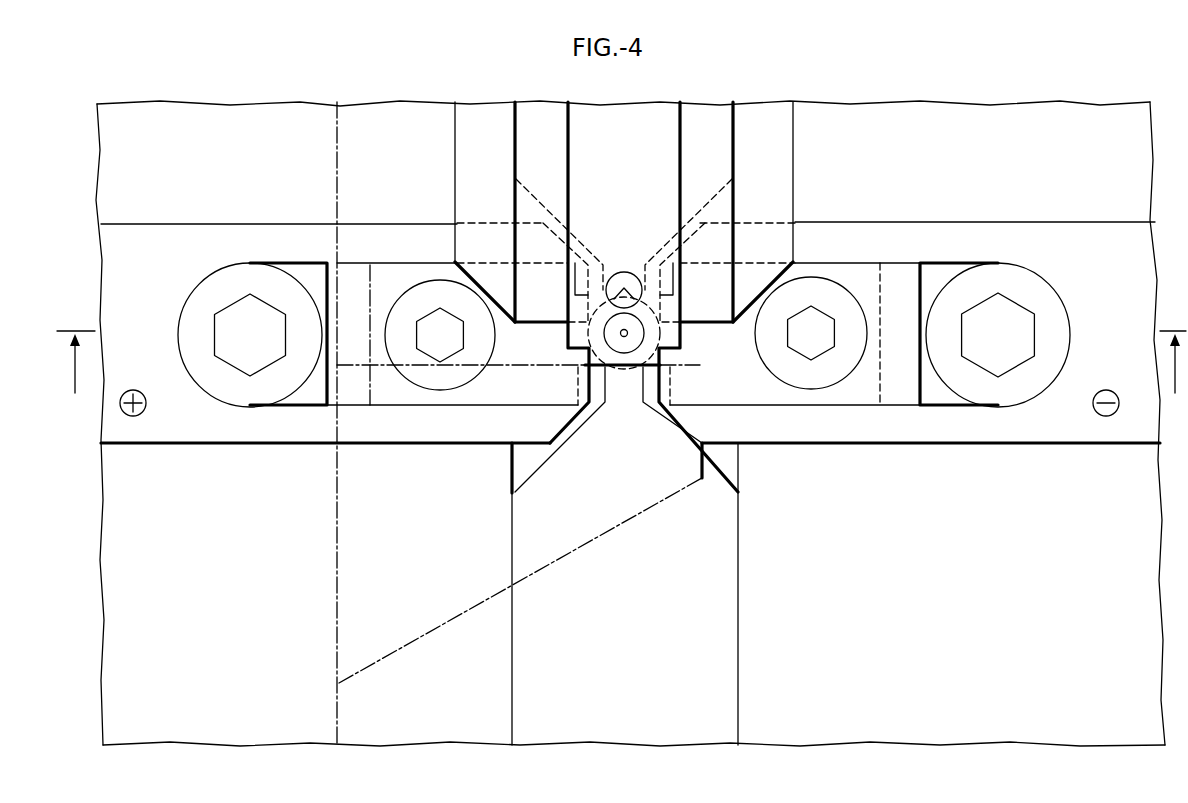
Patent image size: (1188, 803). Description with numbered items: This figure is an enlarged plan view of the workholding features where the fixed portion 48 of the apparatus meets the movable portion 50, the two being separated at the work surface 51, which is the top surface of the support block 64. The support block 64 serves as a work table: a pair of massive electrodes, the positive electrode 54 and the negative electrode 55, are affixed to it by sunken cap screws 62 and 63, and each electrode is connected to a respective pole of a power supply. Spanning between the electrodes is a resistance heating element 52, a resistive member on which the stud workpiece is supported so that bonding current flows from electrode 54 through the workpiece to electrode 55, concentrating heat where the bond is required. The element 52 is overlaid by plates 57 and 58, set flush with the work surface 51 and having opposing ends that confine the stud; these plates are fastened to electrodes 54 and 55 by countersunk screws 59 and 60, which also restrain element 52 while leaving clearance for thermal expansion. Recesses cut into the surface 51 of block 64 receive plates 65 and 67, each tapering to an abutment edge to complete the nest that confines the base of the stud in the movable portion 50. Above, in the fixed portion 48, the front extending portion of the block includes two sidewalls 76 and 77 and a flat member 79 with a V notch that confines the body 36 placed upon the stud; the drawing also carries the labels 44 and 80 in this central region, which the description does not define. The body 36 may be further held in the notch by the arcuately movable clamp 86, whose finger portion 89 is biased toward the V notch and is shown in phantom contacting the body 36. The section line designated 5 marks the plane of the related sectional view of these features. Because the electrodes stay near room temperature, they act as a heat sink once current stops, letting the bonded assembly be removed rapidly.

The section line 5- 5 is at (621, 365).
The body 36 is at (645, 355).
The pin shaft 44 is at (623, 337).
The fixed portion 48 is at (812, 128).
The movable portion 50 is at (1003, 196).
The work surface 51 is at (1131, 528).
The resistance heating element 52 is at (402, 387).
The positive electrode 54 is at (183, 240).
The negative electrode 55 is at (1056, 245).
The plate 57 is at (404, 270).
The plate 58 is at (865, 272).
The countersunk screw 59 is at (480, 372).
The countersunk screw 60 is at (800, 385).
The sunken cap screw 62 is at (193, 330).
The sunken cap screw 63 is at (1058, 337).
The support block 64 is at (893, 745).
The plate 65 is at (710, 203).
The plate 67 is at (695, 678).
The sidewall 76 is at (488, 162).
The sidewall 77 is at (775, 167).
The flat member 79 is at (540, 132).
The central gap 80 is at (652, 158).
The clamp 86 is at (348, 707).
The finger portion 89 is at (637, 515).